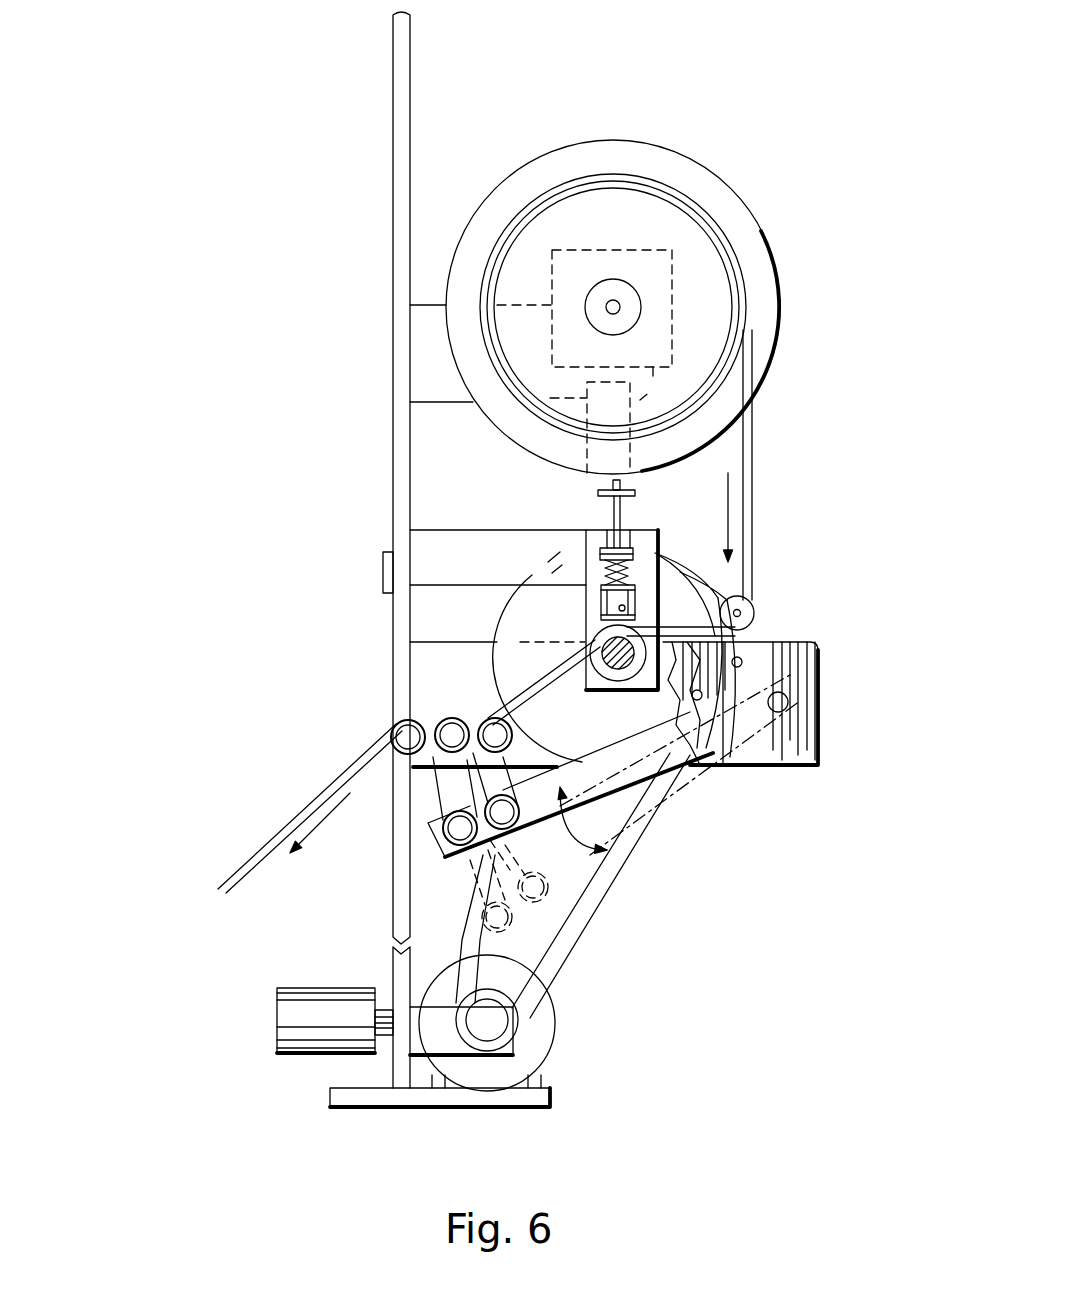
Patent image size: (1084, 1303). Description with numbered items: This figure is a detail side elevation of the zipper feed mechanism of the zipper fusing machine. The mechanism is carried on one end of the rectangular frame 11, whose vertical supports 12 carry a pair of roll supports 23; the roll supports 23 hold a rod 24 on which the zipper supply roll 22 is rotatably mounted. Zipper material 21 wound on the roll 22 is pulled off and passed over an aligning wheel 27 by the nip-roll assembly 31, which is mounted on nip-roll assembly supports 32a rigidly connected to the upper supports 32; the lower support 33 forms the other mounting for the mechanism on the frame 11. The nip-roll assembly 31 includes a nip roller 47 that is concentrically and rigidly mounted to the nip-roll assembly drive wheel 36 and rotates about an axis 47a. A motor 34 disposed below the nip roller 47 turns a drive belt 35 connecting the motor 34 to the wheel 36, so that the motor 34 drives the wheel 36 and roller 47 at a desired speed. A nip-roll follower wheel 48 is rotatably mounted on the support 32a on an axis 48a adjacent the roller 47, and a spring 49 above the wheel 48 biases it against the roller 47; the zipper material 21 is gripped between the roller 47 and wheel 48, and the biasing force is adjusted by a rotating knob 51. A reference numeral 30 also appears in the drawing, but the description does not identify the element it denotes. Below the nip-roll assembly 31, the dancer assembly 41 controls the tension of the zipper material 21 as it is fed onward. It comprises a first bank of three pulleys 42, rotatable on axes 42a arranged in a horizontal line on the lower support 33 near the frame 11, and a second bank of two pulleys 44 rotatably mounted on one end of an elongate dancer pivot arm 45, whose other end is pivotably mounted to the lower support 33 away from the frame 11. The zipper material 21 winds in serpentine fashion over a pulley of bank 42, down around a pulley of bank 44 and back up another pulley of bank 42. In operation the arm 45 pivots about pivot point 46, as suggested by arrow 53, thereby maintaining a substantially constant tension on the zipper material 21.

The frame 11 is at (407, 44).
The vertical supports 12 is at (397, 97).
The zipper material 21 is at (752, 490).
The zipper supply roll 22 is at (645, 232).
The roll supports 23 is at (417, 352).
The rod 24 is at (641, 300).
The aligning wheel 27 is at (757, 612).
The tensioning assembly 30 is at (832, 655).
The nip-roll assembly 31 is at (595, 560).
The upper supports 32 is at (478, 573).
The nip-roll assembly supports 32a is at (625, 530).
The lower support 33 is at (793, 772).
The motor 34 is at (543, 1003).
The drive belt 35 is at (590, 910).
The nip-roll assembly drive wheel 36 is at (722, 595).
The dancer assembly 41 is at (718, 806).
The first bank of pulleys 42 is at (492, 725).
The axes 42a is at (393, 757).
The second bank of pulleys 44 is at (453, 862).
The dancer pivot arm 45 is at (595, 805).
The pivot point 46 is at (790, 702).
The nip roller 47 is at (631, 688).
The axis 47a is at (605, 668).
The nip-roll follower wheel 48 is at (657, 633).
The axis 48a is at (607, 607).
The spring 49 is at (640, 542).
The rotating knob 51 is at (633, 493).
The arrow 53 is at (585, 872).